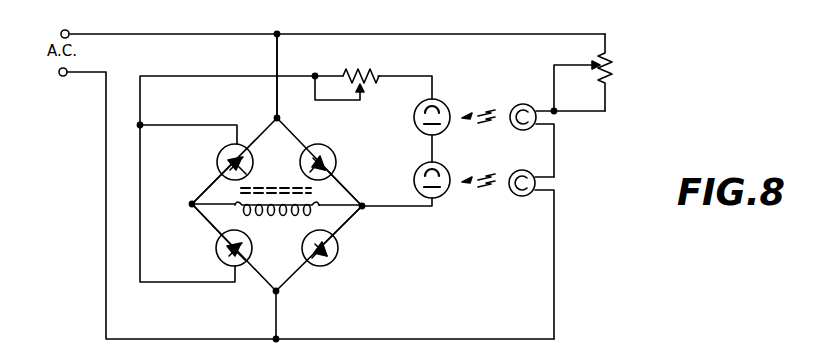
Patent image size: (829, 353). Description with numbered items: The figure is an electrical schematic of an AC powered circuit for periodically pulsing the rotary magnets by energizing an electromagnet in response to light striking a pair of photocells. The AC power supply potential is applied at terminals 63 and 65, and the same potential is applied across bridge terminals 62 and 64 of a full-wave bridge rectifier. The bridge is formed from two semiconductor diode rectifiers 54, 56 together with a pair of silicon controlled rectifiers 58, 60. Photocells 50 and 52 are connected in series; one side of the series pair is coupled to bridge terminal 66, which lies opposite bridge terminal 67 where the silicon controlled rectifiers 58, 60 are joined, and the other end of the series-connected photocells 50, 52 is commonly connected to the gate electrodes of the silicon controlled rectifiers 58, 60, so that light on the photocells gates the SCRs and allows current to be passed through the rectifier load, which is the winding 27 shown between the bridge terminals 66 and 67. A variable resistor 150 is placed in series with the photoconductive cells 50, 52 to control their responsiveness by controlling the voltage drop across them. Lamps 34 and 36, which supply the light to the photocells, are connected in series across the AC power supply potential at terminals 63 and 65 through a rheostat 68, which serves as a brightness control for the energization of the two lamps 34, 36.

The AC power supply terminal 63 is at (65, 30).
The AC power supply terminal 65 is at (63, 76).
The bridge terminal 62 is at (308, 84).
The bridge terminal 64 is at (278, 294).
The bridge terminal 66 is at (363, 209).
The bridge terminal 67 is at (190, 202).
The silicon controlled rectifier 58 is at (217, 158).
The semiconductor diode rectifier 54 is at (337, 162).
The silicon controlled rectifier 60 is at (216, 248).
The semiconductor diode rectifier 56 is at (338, 256).
The motor winding / inductor 27 is at (277, 216).
The variable resistor 150 is at (362, 70).
The photocell 50 is at (434, 100).
The photocell 52 is at (437, 198).
The lamp 34 is at (514, 107).
The lamp 36 is at (513, 195).
The rheostat 68 is at (614, 58).